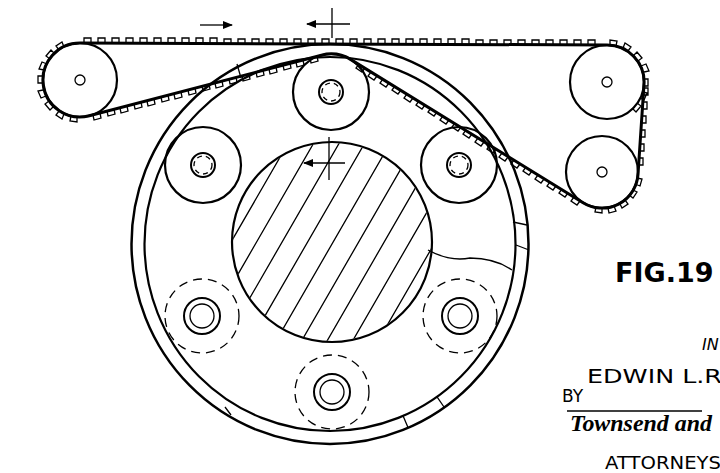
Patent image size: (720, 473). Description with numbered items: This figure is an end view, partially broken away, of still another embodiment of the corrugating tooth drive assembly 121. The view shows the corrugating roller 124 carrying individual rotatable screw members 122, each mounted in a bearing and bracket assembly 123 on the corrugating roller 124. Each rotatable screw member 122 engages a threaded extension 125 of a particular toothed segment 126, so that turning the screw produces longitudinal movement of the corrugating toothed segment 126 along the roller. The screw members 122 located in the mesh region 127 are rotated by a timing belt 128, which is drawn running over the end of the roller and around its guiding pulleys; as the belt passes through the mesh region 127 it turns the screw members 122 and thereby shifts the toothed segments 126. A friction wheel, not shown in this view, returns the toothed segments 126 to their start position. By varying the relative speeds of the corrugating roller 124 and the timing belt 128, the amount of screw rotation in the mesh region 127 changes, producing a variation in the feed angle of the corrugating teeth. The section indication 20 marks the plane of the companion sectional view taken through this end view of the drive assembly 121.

The section line 20- 20 is at (340, 94).
The corrugating tooth drive assembly 121 is at (423, 147).
The rotatable screw member 122 is at (300, 130).
The bearing and bracket assembly 123 is at (492, 263).
The corrugating roller 124 is at (412, 236).
The threaded extension 125 is at (321, 96).
The toothed segment 126 is at (195, 240).
The mesh region 127 is at (297, 33).
The timing belt 128 is at (502, 39).